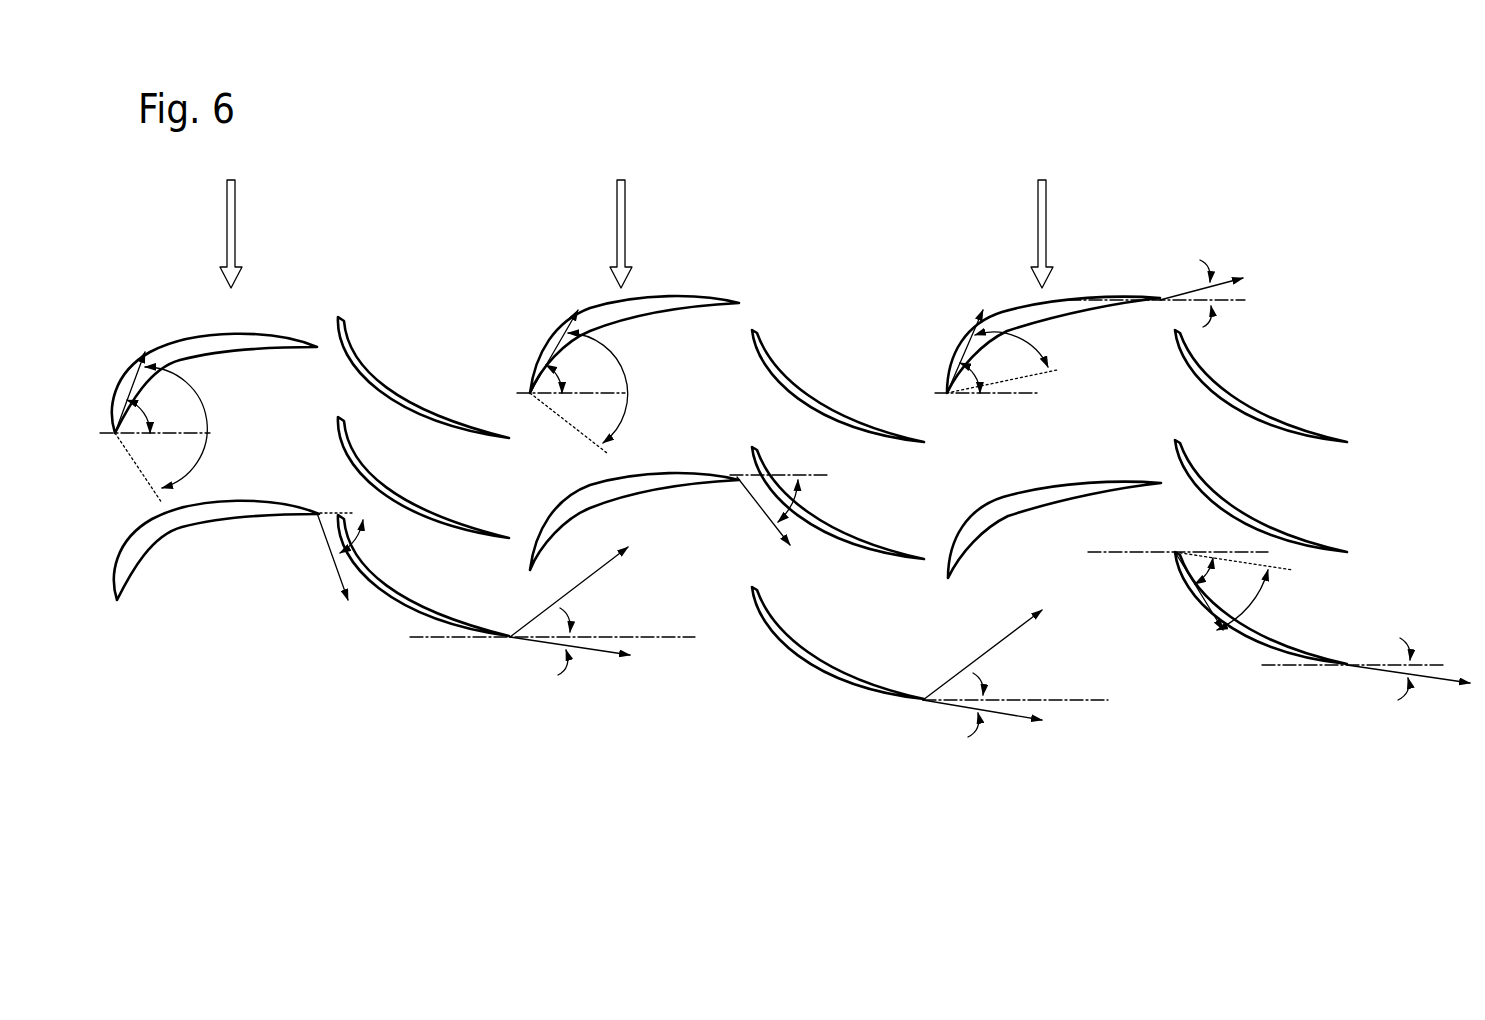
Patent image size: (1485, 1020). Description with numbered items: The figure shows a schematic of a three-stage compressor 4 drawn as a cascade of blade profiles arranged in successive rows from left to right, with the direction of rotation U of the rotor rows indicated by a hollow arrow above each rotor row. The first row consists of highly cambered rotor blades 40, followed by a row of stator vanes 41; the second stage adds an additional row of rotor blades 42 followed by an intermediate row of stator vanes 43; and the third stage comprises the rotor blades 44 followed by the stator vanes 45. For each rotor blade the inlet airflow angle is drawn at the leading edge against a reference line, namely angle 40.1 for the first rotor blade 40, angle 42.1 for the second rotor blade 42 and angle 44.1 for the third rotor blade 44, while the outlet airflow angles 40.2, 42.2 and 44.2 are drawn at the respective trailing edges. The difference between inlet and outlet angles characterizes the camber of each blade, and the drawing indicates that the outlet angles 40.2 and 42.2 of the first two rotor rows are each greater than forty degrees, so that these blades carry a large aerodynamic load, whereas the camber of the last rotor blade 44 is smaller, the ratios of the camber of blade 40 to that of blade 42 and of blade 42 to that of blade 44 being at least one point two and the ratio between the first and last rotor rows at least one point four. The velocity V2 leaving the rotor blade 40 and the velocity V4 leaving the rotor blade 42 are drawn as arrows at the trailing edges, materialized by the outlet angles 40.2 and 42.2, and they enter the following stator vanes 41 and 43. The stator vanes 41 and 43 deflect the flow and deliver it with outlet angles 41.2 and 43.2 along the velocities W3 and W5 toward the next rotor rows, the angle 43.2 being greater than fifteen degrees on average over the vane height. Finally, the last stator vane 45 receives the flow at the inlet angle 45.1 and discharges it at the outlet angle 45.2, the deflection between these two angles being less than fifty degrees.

The compressor 4 is at (683, 640).
The rotor blade 40 is at (165, 357).
The inlet airflow angle of rotor blade 40 40.1 is at (155, 392).
The outlet airflow angle of rotor blade 40 40.2 is at (393, 545).
The stator vane 41 is at (438, 425).
The outlet airflow angle of stator vane 41 41.2 is at (552, 660).
The rotor blade 42 is at (600, 315).
The inlet airflow angle of rotor blade 42 42.1 is at (571, 351).
The outlet airflow angle of rotor blade 42 42.2 is at (825, 498).
The stator vane 43 is at (808, 398).
The outlet airflow angle of stator vane 43 43.2 is at (1007, 724).
The rotor blade 44 is at (1012, 320).
The inlet airflow angle of rotor blade 44 44.1 is at (987, 351).
The outlet airflow angle of rotor blade 44 44.2 is at (1156, 287).
The stator vane 45 is at (1210, 370).
The inlet airflow angle of stator vane 45 45.1 is at (1190, 591).
The outlet airflow angle of stator vane 45 45.2 is at (1366, 674).
The rotor velocity direction U is at (235, 214).
The velocity at exit of rotor blade 40 V2 is at (327, 565).
The velocity at exit of rotor blade 42 V4 is at (757, 518).
The relative velocity at exit of stator vane 41 W3 is at (577, 592).
The relative velocity at exit of stator vane 43 W5 is at (989, 655).